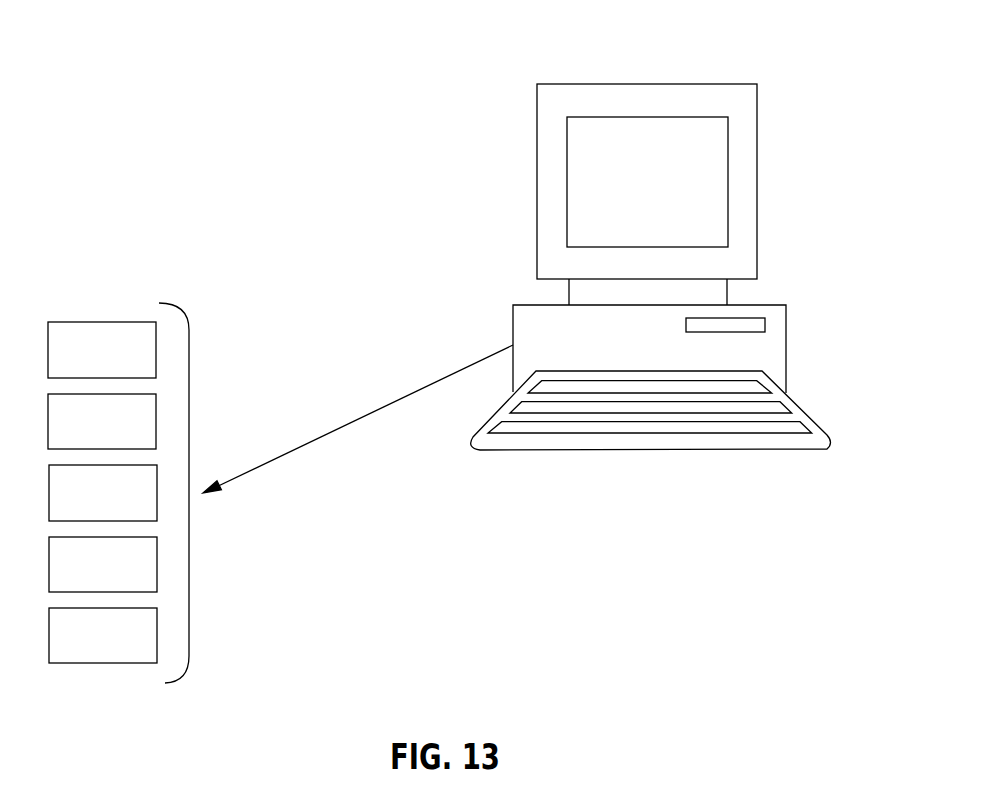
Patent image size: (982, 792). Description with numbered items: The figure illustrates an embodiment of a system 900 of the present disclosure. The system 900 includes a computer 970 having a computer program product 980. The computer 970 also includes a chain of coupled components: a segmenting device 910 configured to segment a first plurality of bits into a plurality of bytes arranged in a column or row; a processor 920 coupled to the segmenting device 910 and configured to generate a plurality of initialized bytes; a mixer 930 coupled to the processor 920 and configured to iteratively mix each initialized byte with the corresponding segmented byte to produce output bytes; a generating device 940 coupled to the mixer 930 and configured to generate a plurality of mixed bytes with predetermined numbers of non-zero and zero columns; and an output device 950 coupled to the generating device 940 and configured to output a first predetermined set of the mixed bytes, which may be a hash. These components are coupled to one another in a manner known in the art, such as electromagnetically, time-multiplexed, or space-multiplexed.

The system 900 is at (440, 89).
The segmenting device 910 is at (102, 350).
The processor 920 is at (102, 421).
The mixer 930 is at (103, 493).
The generating device 940 is at (103, 564).
The output device 950 is at (103, 635).
The computer 970 is at (552, 320).
The computer program product 980 is at (766, 353).